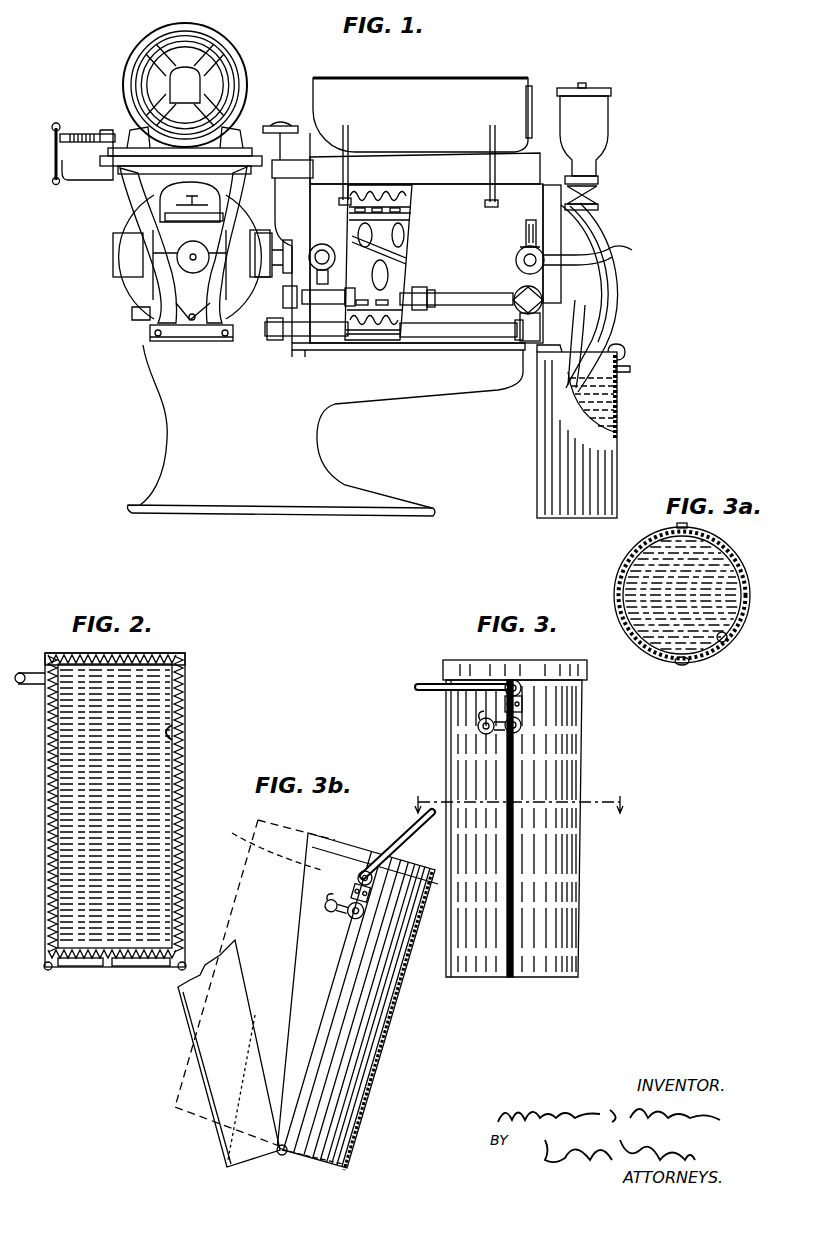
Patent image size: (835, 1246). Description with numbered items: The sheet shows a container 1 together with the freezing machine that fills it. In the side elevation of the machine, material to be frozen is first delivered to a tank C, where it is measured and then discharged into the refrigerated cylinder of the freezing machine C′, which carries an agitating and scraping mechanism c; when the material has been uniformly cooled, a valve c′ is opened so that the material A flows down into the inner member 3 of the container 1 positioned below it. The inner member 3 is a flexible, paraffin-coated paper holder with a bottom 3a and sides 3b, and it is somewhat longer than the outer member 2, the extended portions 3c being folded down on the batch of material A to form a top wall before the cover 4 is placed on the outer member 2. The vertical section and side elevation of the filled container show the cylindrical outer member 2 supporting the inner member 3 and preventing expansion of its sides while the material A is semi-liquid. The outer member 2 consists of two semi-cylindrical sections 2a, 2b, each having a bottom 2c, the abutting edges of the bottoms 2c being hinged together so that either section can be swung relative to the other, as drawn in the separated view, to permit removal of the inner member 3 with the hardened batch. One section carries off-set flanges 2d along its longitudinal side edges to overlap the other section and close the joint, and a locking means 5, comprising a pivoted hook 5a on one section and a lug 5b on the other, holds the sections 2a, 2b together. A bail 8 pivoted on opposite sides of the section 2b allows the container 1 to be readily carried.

In FIG. 1, the tank C is at (490, 90).
In FIG. 1, the agitating and scraping mechanism c is at (400, 240).
In FIG. 1, the freezing machine C′ is at (426, 248).
In FIG. 1, the valve c′ is at (582, 283).
In FIG. 1, the container 1 is at (628, 401).
In FIG. 2, the container 1 is at (99, 806).
In FIG. 3, the container 1 is at (525, 828).
In FIG. 1, the outer member 2 is at (618, 486).
In FIG. 2, the outer member 2 is at (182, 770).
In FIG. 3A, the outer member 2 is at (724, 642).
In FIG. 3B, the semi-cylindrical section 2a is at (230, 1148).
In FIG. 3B, the semi-cylindrical section 2b is at (356, 1127).
In FIG. 2, the bottom 2c is at (150, 968).
In FIG. 3B, the bottom 2c is at (265, 1153).
In FIG. 3, the off-set flanges 2d is at (507, 873).
In FIG. 3A, the off-set flanges 2d is at (681, 666).
In FIG. 1, the inner member 3 is at (620, 398).
In FIG. 2, the inner member 3 is at (72, 839).
In FIG. 3B, the inner member 3 is at (291, 889).
In FIG. 2, the bottom 3a is at (64, 968).
In FIG. 3, the bottom 3a is at (513, 792).
In FIG. 2, the sides 3b is at (170, 735).
In FIG. 3A, the sides 3b is at (728, 637).
In FIG. 1, the extended portions 3c is at (624, 351).
In FIG. 2, the cover 4 is at (185, 659).
In FIG. 3, the cover 4 is at (573, 663).
In FIG. 3, the locking means 5 is at (517, 716).
In FIG. 3B, the locking means 5 is at (347, 894).
In FIG. 3, the pivoted hook 5a is at (500, 732).
In FIG. 3B, the pivoted hook 5a is at (332, 910).
In FIG. 3, the lug 5b is at (486, 728).
In FIG. 1, the bail 8 is at (630, 369).
In FIG. 3, the bail 8 is at (430, 682).
In FIG. 3B, the bail 8 is at (407, 832).
In FIG. 2, the frozen material A is at (153, 828).
In FIG. 3A, the frozen material A is at (690, 600).